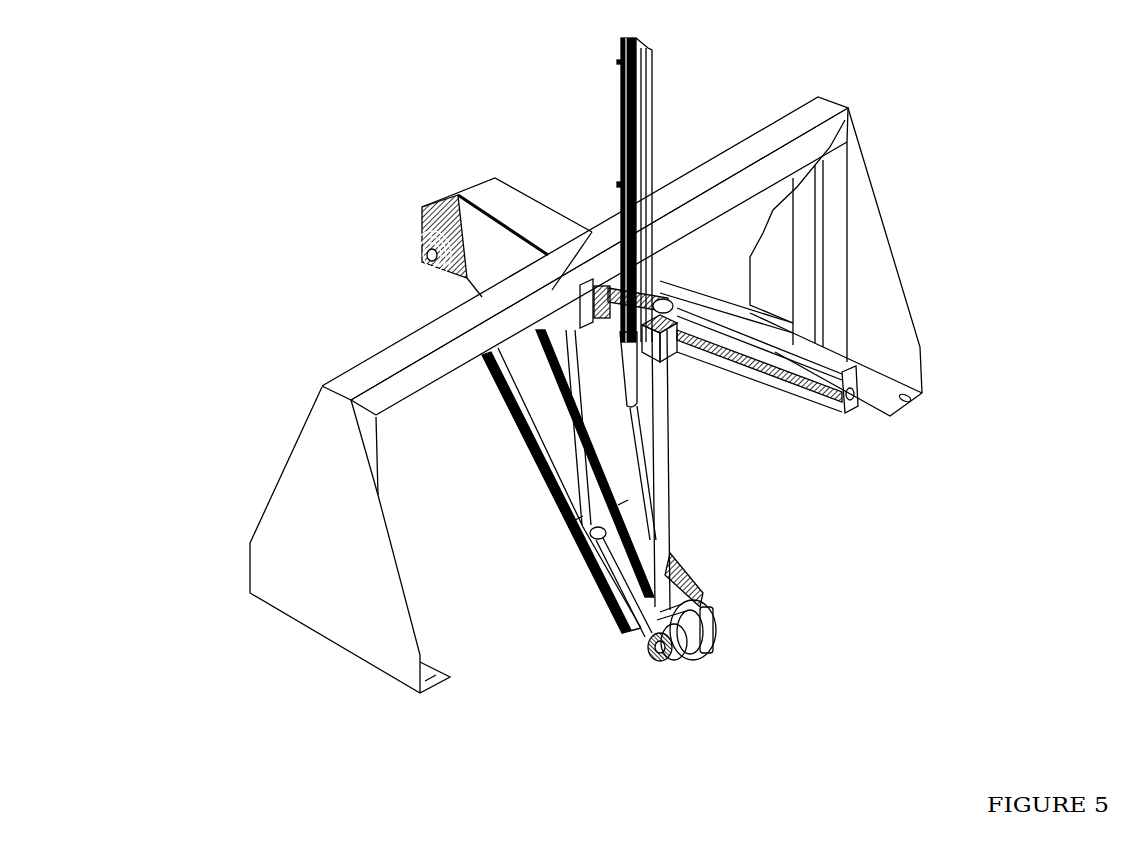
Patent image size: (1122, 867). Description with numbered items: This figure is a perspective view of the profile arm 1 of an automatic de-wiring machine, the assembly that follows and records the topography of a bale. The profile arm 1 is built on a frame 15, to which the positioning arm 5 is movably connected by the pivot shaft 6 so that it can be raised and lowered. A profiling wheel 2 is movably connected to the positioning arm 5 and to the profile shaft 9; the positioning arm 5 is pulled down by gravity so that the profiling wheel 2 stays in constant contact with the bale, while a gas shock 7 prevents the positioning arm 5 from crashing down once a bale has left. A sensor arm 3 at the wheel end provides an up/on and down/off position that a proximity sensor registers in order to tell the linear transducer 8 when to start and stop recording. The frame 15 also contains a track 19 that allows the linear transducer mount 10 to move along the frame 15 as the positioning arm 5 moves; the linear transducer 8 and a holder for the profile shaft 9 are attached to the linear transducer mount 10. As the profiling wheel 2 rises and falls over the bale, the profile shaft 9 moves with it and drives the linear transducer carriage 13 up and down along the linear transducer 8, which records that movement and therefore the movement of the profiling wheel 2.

The profile arm 1 is at (884, 100).
The profiling wheel 2 is at (688, 664).
The sensor arm 3 is at (712, 661).
The positioning arm 5 is at (566, 522).
The pivot shaft 6 is at (428, 259).
The gas shock 7 is at (565, 406).
The linear transducer 8 is at (622, 52).
The profile shaft 9 is at (670, 467).
The linear transducer mount 10 is at (657, 284).
The linear transducer carriage 13 is at (718, 370).
The frame 15 is at (250, 566).
The track 19 is at (851, 412).